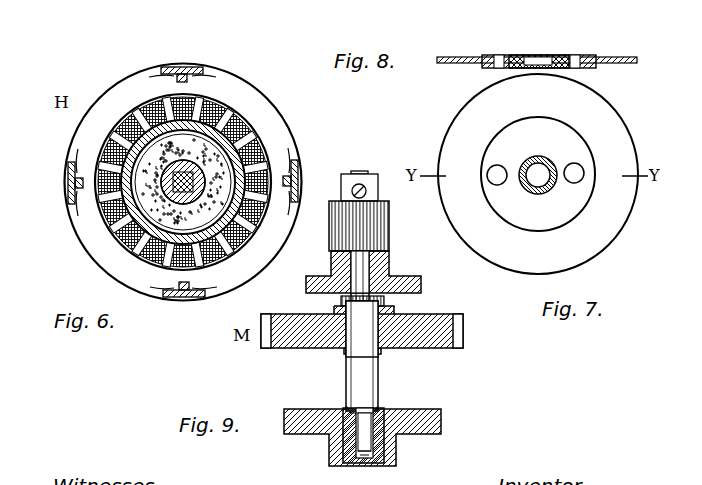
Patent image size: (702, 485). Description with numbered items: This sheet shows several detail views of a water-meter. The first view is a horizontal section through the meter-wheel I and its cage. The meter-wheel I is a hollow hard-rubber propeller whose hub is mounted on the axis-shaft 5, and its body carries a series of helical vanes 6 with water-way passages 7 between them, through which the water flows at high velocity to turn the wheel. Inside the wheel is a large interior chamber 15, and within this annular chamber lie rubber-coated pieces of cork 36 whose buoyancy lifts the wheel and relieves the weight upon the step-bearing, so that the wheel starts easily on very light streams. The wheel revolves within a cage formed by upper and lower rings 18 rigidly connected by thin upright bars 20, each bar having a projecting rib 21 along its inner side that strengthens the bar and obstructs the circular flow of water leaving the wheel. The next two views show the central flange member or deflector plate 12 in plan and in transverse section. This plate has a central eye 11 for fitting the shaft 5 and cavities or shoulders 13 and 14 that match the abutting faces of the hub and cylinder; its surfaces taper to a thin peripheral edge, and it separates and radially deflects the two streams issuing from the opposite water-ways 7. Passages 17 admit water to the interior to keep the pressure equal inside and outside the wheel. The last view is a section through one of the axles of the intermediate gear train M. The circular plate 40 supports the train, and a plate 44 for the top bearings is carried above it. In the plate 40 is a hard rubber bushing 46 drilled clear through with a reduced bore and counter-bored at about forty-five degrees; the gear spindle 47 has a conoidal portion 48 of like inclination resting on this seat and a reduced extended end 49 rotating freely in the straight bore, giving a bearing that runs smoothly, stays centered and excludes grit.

In FIG. 6, the axis-shaft 5 is at (163, 152).
In FIG. 6, the helical vanes 6 is at (118, 230).
In FIG. 6, the water-way passages 7 is at (97, 220).
In FIG. 6, the interior chamber 15 is at (240, 240).
In FIG. 6, the cage rings 18 is at (82, 131).
In FIG. 6, the upright bars 20 is at (170, 65).
In FIG. 6, the projecting rib 21 is at (212, 73).
In FIG. 6, the cork pieces 36 is at (183, 185).
In FIG. 6, the meter-wheel I is at (233, 136).
In FIG. 8, the central eye 11 is at (535, 52).
In FIG. 7, the central eye 11 is at (539, 176).
In FIG. 8, the deflector plate 12 is at (542, 72).
In FIG. 7, the deflector plate 12 is at (538, 174).
In FIG. 8, the cavity or shoulder 13 is at (517, 51).
In FIG. 7, the cavity or shoulder 13 is at (545, 163).
In FIG. 8, the cavity or shoulder 14 is at (592, 50).
In FIG. 7, the cavity or shoulder 14 is at (588, 150).
In FIG. 8, the passages 17 is at (495, 52).
In FIG. 7, the passages 17 is at (497, 168).
In FIG. 9, the circular plate 40 is at (428, 420).
In FIG. 9, the top-bearing plate 44 is at (420, 286).
In FIG. 9, the hard rubber bushing 46 is at (340, 442).
In FIG. 9, the gear spindle 47 is at (360, 371).
In FIG. 9, the conoidal portion 48 is at (363, 408).
In FIG. 9, the reduced extended end 49 is at (362, 442).
In FIG. 9, the intermediate gear train M is at (362, 329).